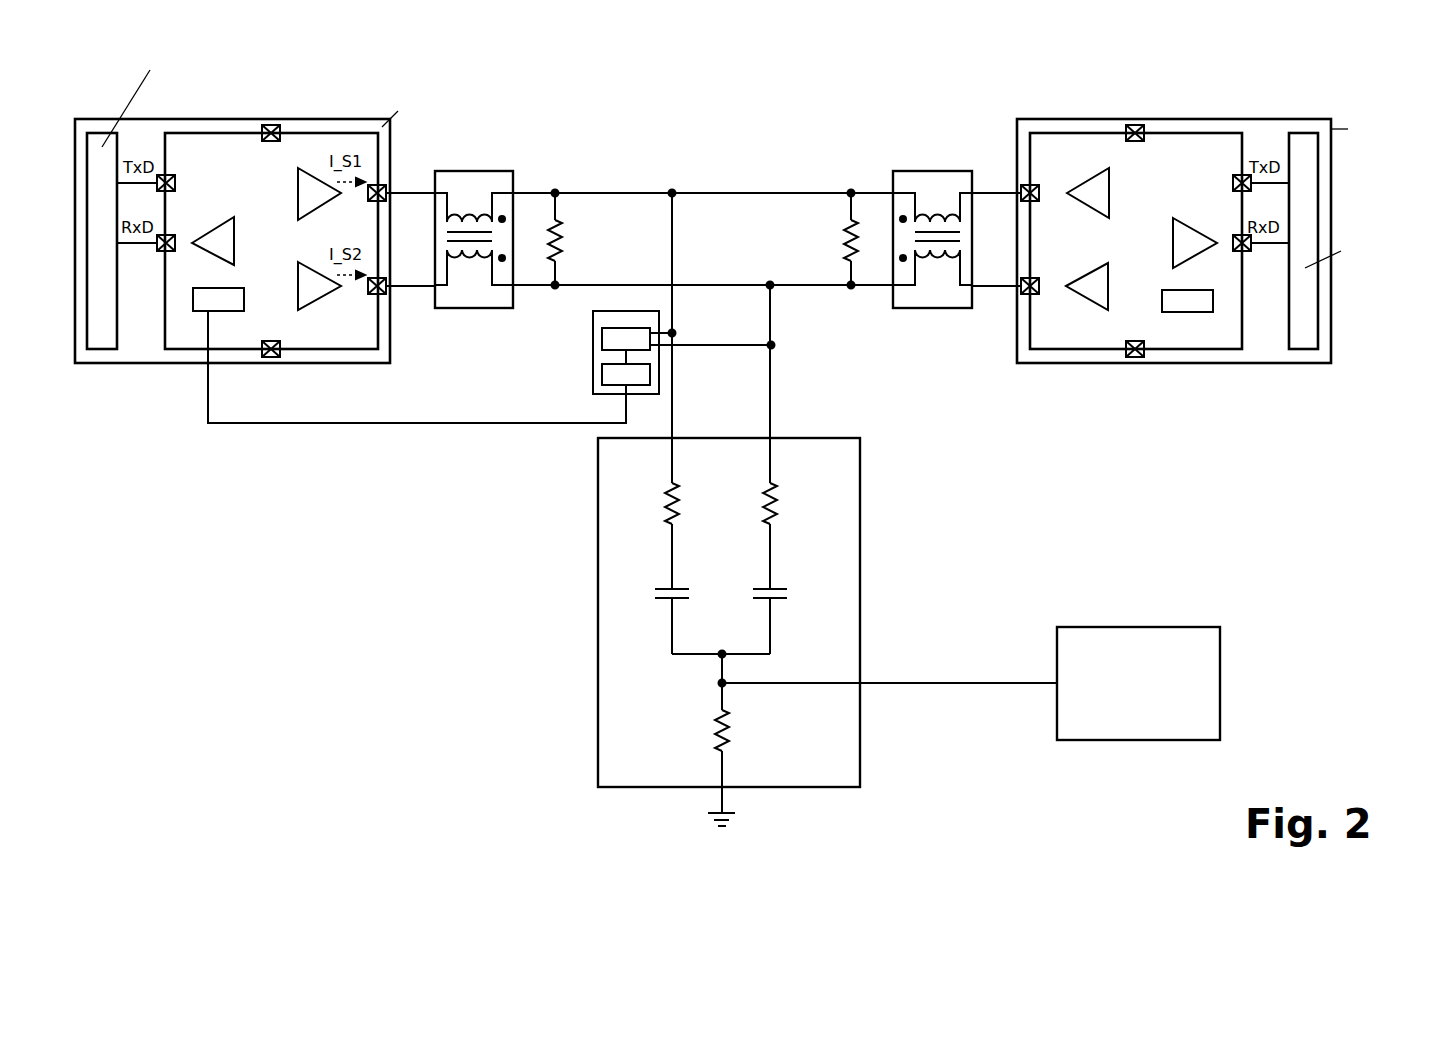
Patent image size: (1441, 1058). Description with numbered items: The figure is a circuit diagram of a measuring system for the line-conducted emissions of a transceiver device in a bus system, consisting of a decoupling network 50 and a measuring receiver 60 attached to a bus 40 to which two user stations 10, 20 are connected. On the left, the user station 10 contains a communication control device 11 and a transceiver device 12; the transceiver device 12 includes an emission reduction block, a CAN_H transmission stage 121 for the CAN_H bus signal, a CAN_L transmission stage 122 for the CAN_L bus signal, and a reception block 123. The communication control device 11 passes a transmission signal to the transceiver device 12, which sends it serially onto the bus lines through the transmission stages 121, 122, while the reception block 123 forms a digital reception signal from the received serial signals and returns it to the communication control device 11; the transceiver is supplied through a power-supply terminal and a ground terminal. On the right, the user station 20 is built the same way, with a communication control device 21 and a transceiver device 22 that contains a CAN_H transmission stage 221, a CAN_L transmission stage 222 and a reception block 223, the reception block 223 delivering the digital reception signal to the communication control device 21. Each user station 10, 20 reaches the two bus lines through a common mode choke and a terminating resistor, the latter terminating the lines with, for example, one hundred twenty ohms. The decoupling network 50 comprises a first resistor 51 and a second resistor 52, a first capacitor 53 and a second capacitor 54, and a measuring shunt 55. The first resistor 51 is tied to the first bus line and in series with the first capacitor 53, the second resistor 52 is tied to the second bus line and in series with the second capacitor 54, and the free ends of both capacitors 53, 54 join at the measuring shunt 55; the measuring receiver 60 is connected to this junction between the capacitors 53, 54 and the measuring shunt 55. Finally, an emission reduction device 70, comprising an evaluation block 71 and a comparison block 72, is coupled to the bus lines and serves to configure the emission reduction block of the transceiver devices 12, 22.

The user station 10 is at (112, 363).
The communication control device 11 is at (102, 132).
The transceiver device 12 is at (360, 132).
The user station 20 is at (1295, 363).
The communication control device 21 is at (1304, 132).
The transceiver device 22 is at (1046, 132).
The bus 40 is at (666, 146).
The decoupling network 50 is at (822, 787).
The first resistor 51 is at (682, 500).
The second resistor 52 is at (780, 500).
The first capacitor 53 is at (683, 589).
The second capacitor 54 is at (781, 589).
The measuring shunt 55 is at (732, 728).
The measuring receiver 60 is at (1118, 740).
The emission reduction device 70 is at (592, 320).
The evaluation block 71 is at (601, 345).
The comparison block 72 is at (601, 375).
The CAN_H transmission stage 121 is at (318, 176).
The CAN_L transmission stage 122 is at (320, 300).
The reception block 123 is at (210, 224).
The CAN_H transmission stage 221 is at (1089, 176).
The CAN_L transmission stage 222 is at (1090, 300).
The reception block 223 is at (1196, 226).